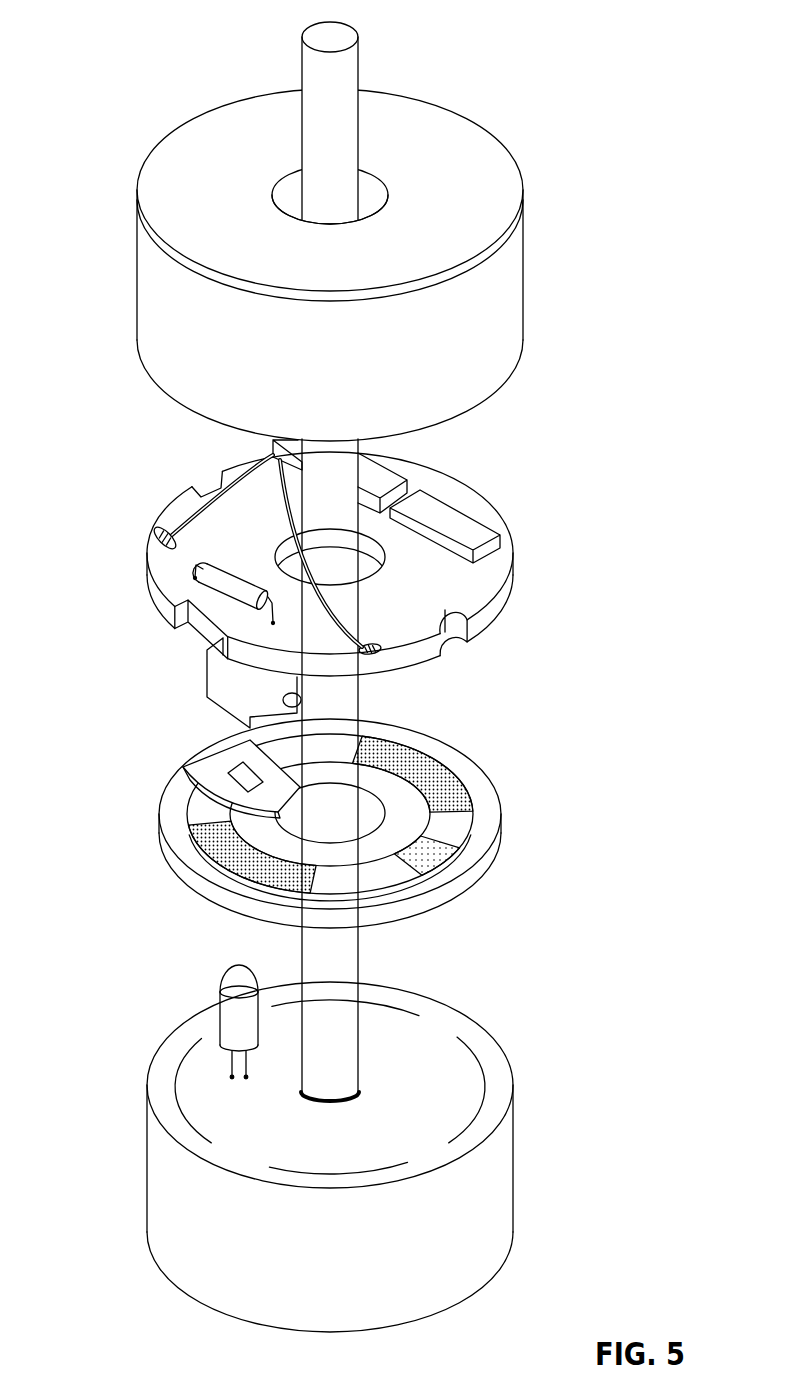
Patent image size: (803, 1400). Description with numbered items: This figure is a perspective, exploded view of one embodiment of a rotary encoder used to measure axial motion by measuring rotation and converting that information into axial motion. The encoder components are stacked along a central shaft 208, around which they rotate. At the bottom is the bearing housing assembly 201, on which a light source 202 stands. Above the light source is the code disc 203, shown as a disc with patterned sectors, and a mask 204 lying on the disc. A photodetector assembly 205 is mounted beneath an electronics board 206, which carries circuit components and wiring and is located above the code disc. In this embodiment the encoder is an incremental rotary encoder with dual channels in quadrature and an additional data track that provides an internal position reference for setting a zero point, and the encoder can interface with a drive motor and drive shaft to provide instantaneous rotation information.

The bearing housing assembly 201 is at (147, 1175).
The light source 202 is at (218, 993).
The code disc 203 is at (163, 852).
The mask 204 is at (205, 752).
The photodetector assembly 205 is at (207, 673).
The electronics board 206 is at (165, 518).
The shaft 208 is at (336, 30).